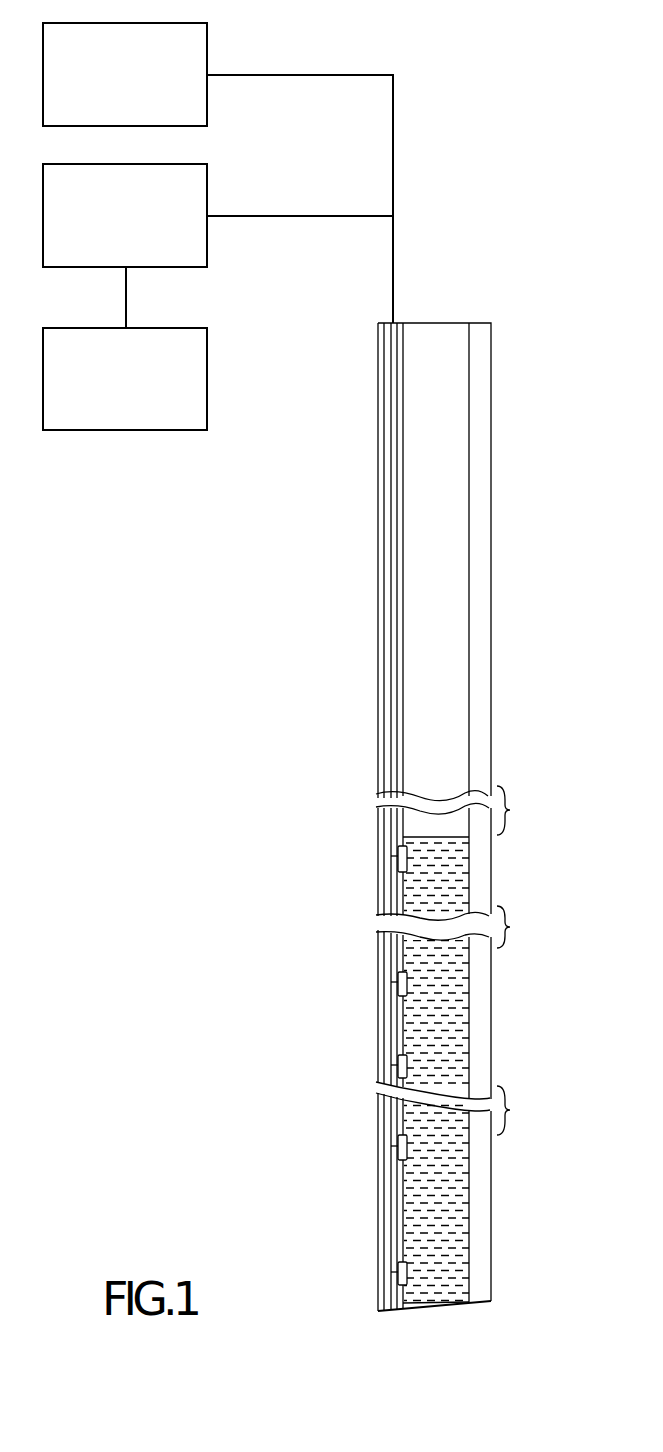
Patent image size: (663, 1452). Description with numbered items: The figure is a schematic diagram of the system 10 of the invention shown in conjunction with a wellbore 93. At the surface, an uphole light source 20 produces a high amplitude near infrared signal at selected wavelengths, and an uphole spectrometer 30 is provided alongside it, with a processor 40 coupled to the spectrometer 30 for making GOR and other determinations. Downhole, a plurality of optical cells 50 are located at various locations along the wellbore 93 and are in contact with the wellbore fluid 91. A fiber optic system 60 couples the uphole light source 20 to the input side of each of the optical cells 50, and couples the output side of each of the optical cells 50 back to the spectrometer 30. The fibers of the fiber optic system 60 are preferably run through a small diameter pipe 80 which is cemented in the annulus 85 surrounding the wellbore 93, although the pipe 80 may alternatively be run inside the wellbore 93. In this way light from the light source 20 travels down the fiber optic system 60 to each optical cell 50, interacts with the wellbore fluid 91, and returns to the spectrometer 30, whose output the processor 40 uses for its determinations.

The system 10 is at (524, 163).
The uphole light source 20 is at (191, 23).
The uphole spectrometer 30 is at (191, 165).
The processor 40 is at (191, 329).
The optical cells 50 is at (398, 855).
The fiber optic system 60 is at (335, 216).
The small diameter pipe 80 is at (384, 648).
The annulus 85 is at (491, 517).
The wellbore fluid 91 is at (445, 1197).
The wellbore 93 is at (452, 467).